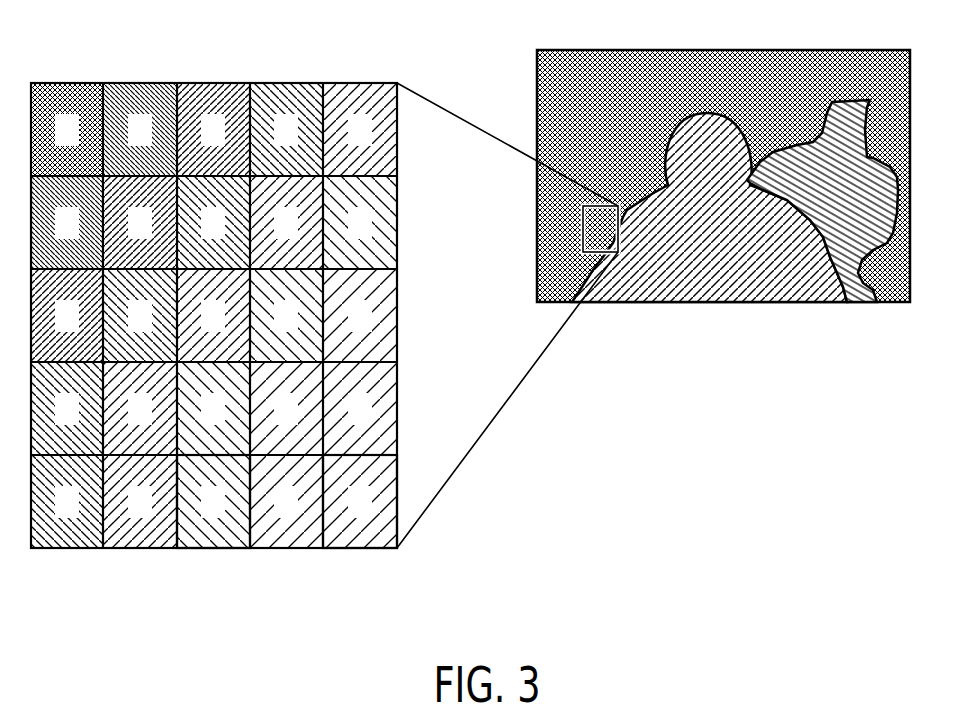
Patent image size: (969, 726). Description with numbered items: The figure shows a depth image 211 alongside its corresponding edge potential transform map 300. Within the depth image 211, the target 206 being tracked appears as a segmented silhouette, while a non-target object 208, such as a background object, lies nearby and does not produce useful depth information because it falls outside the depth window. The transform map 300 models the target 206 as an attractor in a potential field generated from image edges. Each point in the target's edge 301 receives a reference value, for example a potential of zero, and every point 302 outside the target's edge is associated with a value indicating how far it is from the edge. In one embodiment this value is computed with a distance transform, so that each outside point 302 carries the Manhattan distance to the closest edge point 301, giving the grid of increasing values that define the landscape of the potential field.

The edge potential transform map 300 is at (153, 78).
The target's edge 301 is at (367, 530).
The point outside target's edge 302 is at (217, 530).
The segmented image 211 is at (777, 47).
The target 206 is at (710, 255).
The non-target object 208 is at (840, 193).